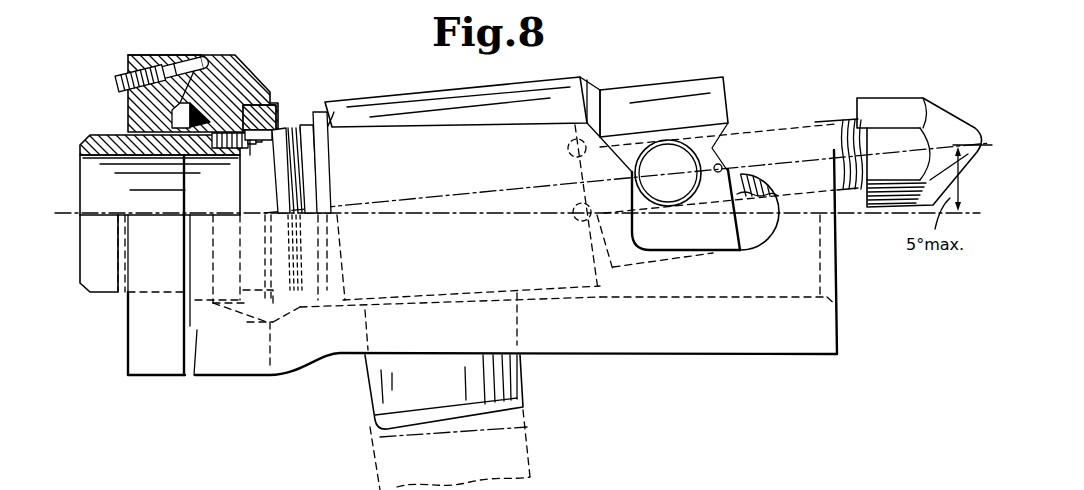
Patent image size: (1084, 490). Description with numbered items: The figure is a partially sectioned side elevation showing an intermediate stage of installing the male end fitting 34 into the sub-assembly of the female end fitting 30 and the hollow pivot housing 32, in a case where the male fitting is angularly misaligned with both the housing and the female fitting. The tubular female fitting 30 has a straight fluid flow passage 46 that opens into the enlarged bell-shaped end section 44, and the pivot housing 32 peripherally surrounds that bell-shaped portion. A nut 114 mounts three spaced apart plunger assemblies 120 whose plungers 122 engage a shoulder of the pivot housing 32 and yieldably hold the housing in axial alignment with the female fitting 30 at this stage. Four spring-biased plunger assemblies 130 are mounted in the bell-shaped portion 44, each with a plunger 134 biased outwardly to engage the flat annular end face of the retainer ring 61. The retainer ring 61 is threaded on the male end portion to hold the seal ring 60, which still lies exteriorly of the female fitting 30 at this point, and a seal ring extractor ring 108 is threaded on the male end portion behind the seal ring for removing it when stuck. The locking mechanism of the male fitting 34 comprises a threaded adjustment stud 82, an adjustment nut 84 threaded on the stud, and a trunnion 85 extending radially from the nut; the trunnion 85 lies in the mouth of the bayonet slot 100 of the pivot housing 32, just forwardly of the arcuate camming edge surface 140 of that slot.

The female end fitting 30 is at (104, 297).
The pivot housing 32 is at (221, 54).
The male end fitting 34 is at (398, 96).
The bell-shaped end section 44 is at (256, 100).
The fluid flow passage 46 is at (100, 156).
The seal ring 60 is at (293, 128).
The retainer ring 61 is at (275, 130).
The threaded adjustment stud 82 is at (917, 97).
The adjustment nut 84 is at (722, 91).
The trunnion 85 is at (680, 173).
The bayonet slot 100 is at (765, 232).
The seal ring extractor ring 108 is at (315, 114).
The nut 114 is at (142, 54).
The plunger assembly 120 is at (104, 79).
The plunger 122 is at (193, 62).
The spring-biased plunger assembly 130 is at (219, 149).
The plunger 134 is at (255, 140).
The arcuate camming edge surface 140 is at (728, 167).